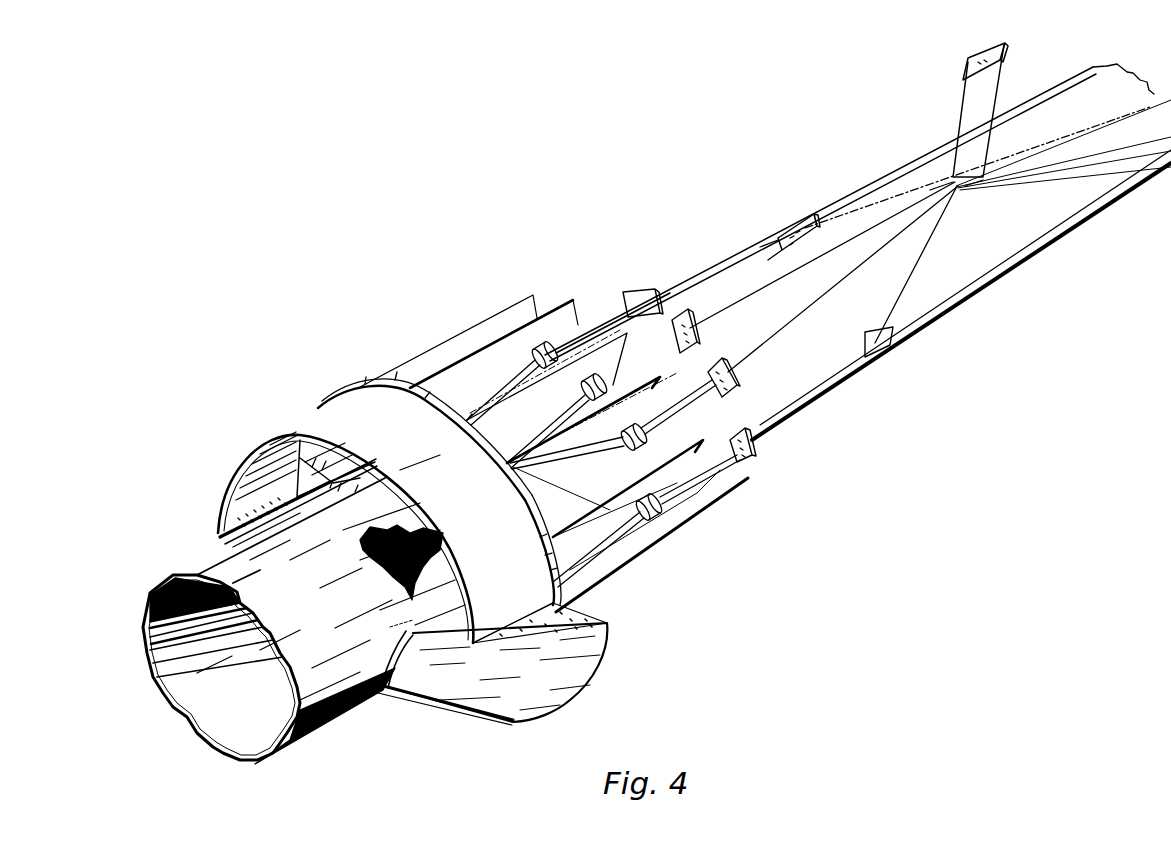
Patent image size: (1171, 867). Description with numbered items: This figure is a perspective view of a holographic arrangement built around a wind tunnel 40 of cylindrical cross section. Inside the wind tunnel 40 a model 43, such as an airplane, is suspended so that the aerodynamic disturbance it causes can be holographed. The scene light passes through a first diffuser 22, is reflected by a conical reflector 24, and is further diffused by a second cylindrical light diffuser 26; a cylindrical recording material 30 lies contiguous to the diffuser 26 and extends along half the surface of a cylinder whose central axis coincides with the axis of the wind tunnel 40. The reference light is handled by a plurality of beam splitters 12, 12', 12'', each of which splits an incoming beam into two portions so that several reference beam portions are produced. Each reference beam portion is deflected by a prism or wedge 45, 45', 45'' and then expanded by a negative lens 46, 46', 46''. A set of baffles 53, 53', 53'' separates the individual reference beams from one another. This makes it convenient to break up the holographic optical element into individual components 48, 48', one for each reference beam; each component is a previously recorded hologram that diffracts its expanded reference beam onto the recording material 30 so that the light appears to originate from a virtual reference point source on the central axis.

The beam splitter 12 is at (961, 61).
The beam splitter 12' is at (983, 117).
The beam splitter 12'' is at (780, 229).
The first diffuser 22 is at (596, 602).
The conical reflector 24 is at (600, 661).
The second cylindrical light diffuser 26 is at (396, 632).
The cylindrical recording material 30 is at (232, 478).
The wind tunnel 40 is at (990, 283).
The model 43 is at (363, 542).
The prism or wedge 45 is at (766, 445).
The prism or wedge 45' is at (744, 378).
The prism or wedge 45'' is at (651, 323).
The negative lens 46 is at (646, 521).
The negative lens 46' is at (613, 424).
The negative lens 46'' is at (538, 404).
The optical element 48 is at (536, 569).
The optical element component 48' is at (425, 498).
The baffle 53 is at (652, 541).
The baffle 53' is at (618, 477).
The baffle 53'' is at (527, 379).